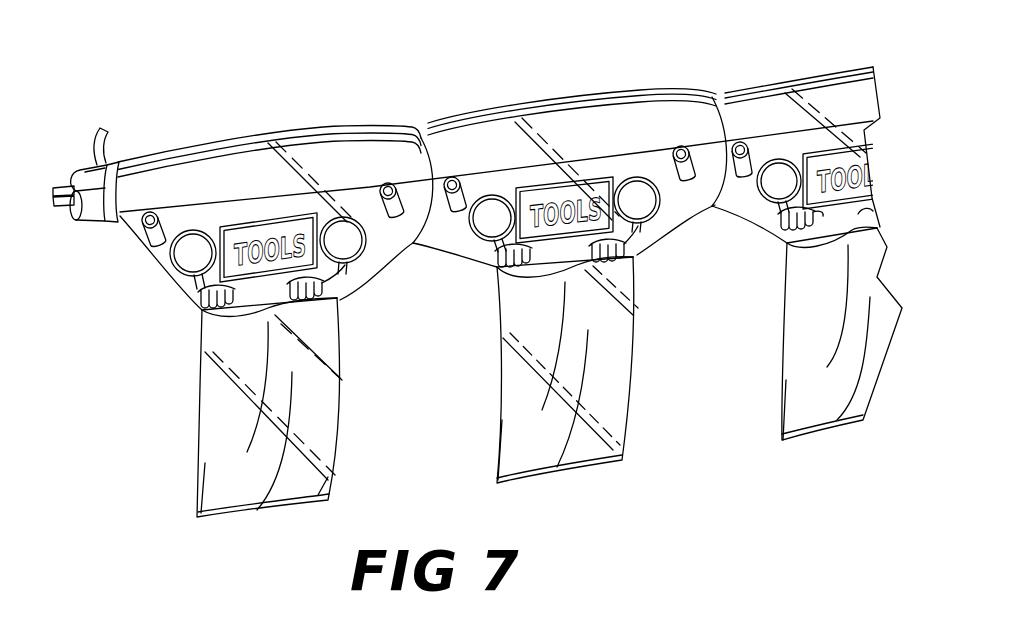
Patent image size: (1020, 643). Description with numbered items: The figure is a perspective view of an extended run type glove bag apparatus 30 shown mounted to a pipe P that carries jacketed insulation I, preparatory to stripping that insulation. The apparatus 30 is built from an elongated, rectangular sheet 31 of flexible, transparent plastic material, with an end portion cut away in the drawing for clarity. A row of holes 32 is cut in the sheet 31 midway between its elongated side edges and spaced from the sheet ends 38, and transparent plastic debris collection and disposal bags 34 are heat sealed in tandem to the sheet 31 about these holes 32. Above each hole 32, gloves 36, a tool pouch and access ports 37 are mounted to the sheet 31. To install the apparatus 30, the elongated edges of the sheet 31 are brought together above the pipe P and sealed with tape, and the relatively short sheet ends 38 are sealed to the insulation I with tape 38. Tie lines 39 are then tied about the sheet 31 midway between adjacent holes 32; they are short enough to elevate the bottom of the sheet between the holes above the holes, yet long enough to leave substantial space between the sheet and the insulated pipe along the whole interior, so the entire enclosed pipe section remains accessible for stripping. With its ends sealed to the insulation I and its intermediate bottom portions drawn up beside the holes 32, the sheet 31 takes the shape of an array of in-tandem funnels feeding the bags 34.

The apparatus 30 is at (251, 130).
The sheet 31 is at (840, 102).
The holes 32 is at (266, 310).
The debris collection and disposal bags 34 is at (345, 352).
The gloves 36 is at (473, 230).
The access ports 37 is at (140, 228).
The sheet ends 38 is at (110, 150).
The tie lines 39 is at (422, 138).
The pipe P is at (58, 188).
The jacketed insulation I is at (77, 180).